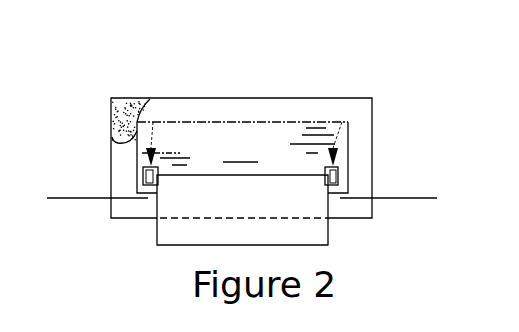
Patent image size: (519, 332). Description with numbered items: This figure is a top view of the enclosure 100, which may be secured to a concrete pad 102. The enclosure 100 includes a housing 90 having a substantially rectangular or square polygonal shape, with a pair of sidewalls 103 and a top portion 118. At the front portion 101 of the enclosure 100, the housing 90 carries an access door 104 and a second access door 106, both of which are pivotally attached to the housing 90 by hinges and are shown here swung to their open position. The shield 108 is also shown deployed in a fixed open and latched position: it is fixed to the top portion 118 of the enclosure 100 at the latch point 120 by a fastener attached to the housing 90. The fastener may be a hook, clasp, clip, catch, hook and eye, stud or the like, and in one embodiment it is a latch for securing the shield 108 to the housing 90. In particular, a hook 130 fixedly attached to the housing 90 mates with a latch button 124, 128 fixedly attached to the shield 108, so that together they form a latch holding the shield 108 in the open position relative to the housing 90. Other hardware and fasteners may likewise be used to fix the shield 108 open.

The housing 90 is at (190, 122).
The enclosure 100 is at (278, 60).
The front portion 101 is at (362, 258).
The concrete pad 102 is at (362, 115).
The sidewalls 103 is at (132, 141).
The access door 104 is at (67, 199).
The second access door 106 is at (412, 199).
The shield 108 is at (157, 227).
The top portion 118 is at (243, 151).
The latch point 120 is at (152, 122).
The latch button 124 is at (338, 178).
The latch button 128 is at (143, 179).
The hook 130 is at (143, 167).